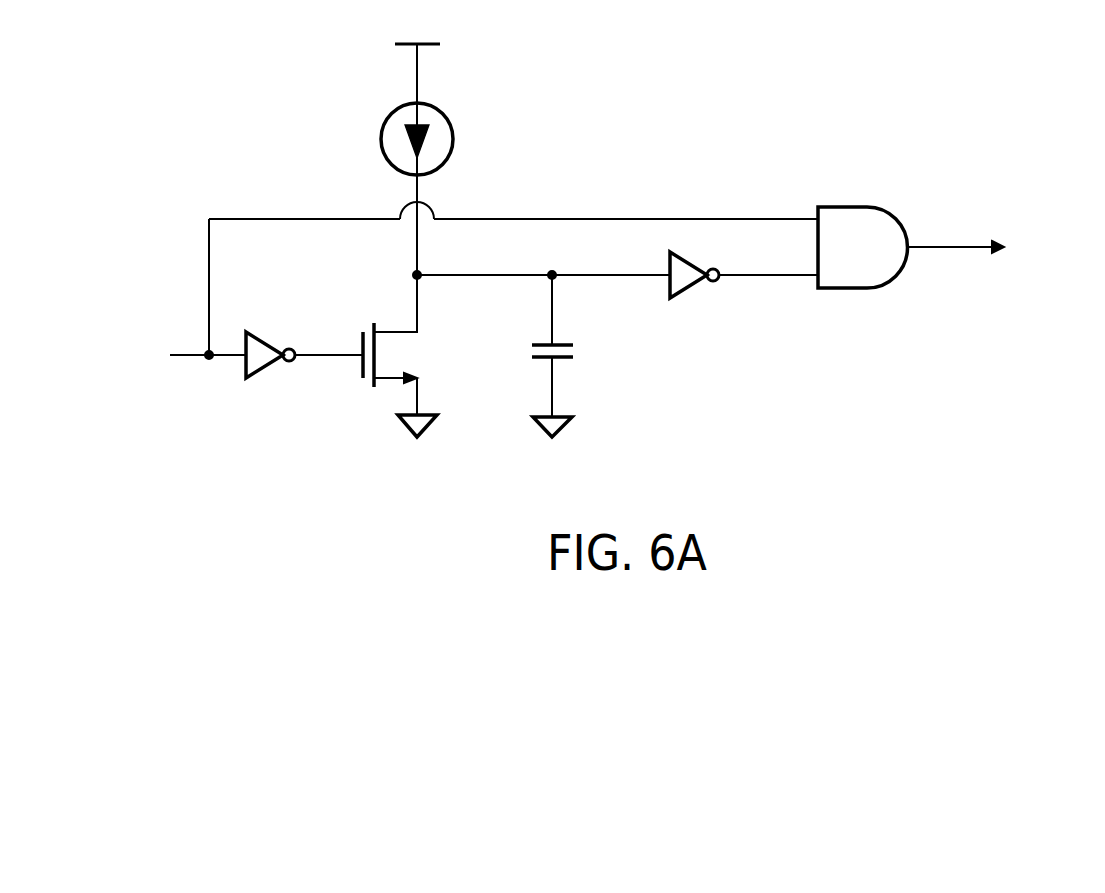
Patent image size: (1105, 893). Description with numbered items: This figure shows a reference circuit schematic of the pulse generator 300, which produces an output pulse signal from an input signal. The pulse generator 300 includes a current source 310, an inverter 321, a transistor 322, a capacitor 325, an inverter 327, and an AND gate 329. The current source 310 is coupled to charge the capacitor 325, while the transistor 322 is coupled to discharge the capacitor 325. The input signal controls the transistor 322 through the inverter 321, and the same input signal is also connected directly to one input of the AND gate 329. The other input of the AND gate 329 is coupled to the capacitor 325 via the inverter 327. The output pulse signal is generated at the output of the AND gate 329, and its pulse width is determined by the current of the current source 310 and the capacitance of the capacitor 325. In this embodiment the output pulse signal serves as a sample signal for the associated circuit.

The pulse generator 300 is at (1002, 62).
The current source 310 is at (382, 138).
The inverter 321 is at (263, 368).
The transistor 322 is at (390, 313).
The capacitor 325 is at (560, 337).
The inverter 327 is at (688, 288).
The AND gate 329 is at (868, 205).